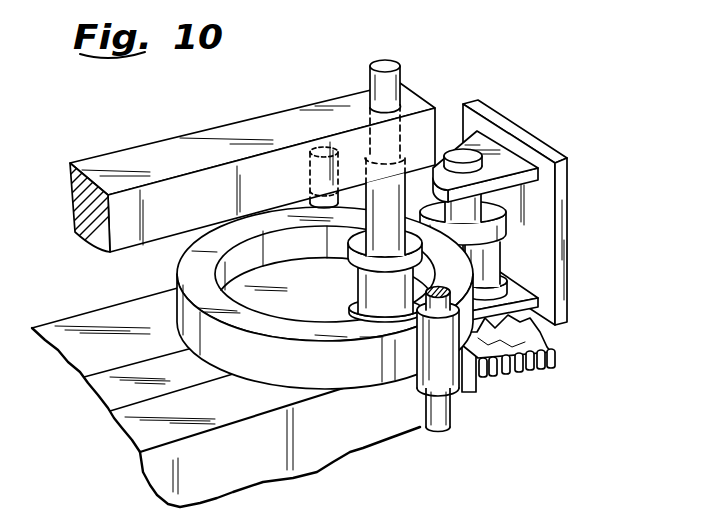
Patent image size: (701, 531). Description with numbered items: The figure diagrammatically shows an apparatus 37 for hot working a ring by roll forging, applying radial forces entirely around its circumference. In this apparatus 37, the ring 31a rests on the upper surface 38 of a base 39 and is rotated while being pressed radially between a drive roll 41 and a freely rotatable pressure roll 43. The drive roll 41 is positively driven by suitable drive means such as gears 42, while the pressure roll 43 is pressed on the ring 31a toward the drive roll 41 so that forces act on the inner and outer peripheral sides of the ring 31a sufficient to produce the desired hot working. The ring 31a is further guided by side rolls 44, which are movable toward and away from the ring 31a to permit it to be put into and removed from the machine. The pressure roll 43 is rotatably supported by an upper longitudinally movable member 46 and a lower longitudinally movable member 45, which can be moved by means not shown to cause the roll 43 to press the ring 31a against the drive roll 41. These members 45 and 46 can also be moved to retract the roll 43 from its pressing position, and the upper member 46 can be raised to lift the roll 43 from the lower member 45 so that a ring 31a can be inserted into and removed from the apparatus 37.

The apparatus 37 is at (237, 175).
The upper longitudinally movable member 46 is at (242, 130).
The side rolls 44 is at (331, 193).
The pressure roll 43 is at (362, 279).
The upper surface 38 is at (92, 318).
The lower longitudinally movable member 45 is at (110, 392).
The base 39 is at (258, 466).
The ring 31a is at (371, 379).
The drive roll 41 is at (490, 255).
The gears 42 is at (507, 373).